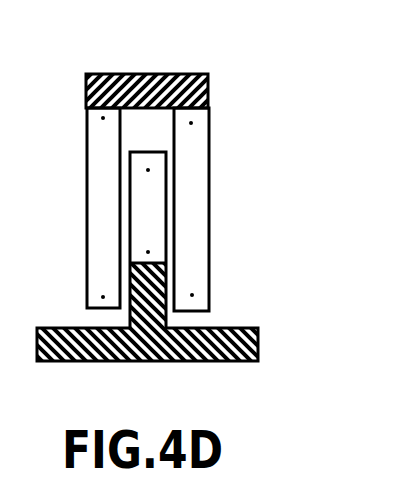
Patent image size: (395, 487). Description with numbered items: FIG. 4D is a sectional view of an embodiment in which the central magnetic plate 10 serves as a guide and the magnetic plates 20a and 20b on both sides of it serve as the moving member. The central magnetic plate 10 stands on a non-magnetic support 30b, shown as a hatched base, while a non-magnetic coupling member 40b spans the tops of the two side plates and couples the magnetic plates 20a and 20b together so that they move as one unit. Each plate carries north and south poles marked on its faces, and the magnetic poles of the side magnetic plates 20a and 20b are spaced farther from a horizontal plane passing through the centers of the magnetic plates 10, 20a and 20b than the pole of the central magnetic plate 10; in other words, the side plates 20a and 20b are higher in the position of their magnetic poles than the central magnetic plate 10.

The central magnetic plate 10 is at (135, 192).
The magnetic plate 20a is at (97, 218).
The magnetic plate 20b is at (199, 203).
The non-magnetic support 30b is at (241, 327).
The non-magnetic coupling member 40b is at (210, 98).